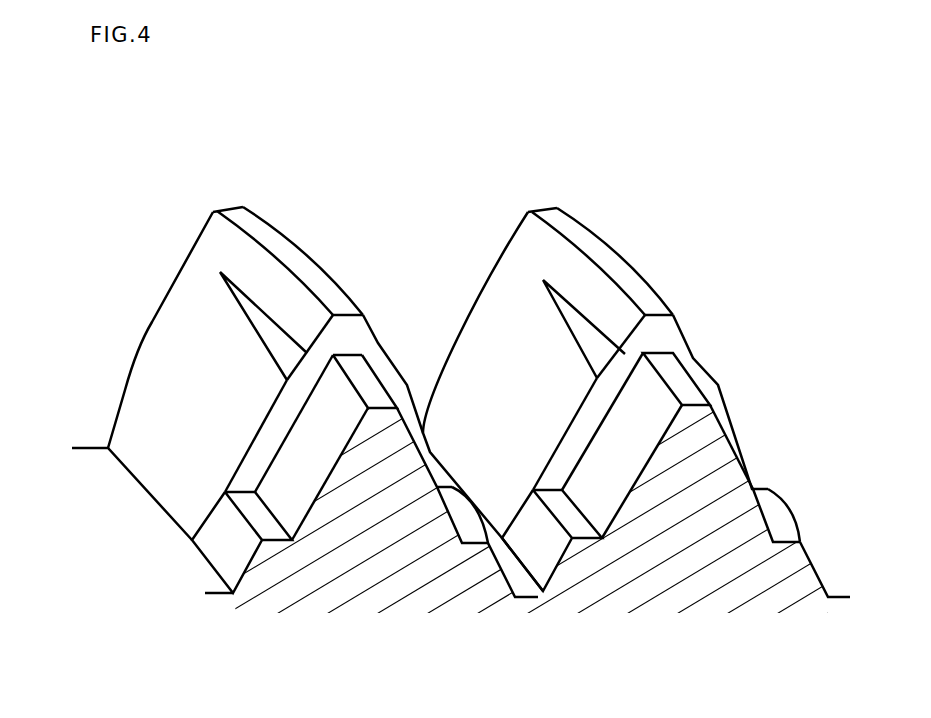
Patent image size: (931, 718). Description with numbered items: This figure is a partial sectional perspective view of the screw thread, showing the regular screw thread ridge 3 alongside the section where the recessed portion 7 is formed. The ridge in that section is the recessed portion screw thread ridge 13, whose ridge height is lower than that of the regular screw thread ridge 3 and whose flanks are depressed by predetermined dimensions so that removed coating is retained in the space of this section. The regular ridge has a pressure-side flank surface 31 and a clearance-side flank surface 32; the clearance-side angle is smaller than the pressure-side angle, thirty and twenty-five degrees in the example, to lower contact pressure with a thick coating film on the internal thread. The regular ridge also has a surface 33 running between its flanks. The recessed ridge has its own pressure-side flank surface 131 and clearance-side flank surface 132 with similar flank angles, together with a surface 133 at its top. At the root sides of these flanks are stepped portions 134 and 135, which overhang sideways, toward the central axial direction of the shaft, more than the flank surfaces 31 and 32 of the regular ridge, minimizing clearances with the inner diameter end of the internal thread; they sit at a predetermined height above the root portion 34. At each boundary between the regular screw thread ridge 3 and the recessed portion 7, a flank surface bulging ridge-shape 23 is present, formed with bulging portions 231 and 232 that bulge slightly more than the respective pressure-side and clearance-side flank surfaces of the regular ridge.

The screw thread ridge 3 is at (232, 356).
The recessed portion 7 is at (278, 433).
The recessed portion screw thread ridge 13 is at (298, 452).
The flank surface bulging ridge-shape 23 is at (317, 333).
The pressure-side flank surface 31 is at (177, 322).
The clearance-side flank surface 32 is at (338, 306).
The outer peripheral surface 33 is at (283, 235).
The root portion 34 is at (580, 430).
The pressure-side flank surface 131 is at (312, 470).
The clearance-side flank surface 132 is at (448, 505).
The chamfered portion 133 is at (375, 393).
The stepped portion 134 is at (257, 513).
The stepped portion 135 is at (488, 539).
The bulging portion 231 is at (267, 375).
The bulging portion 232 is at (407, 385).